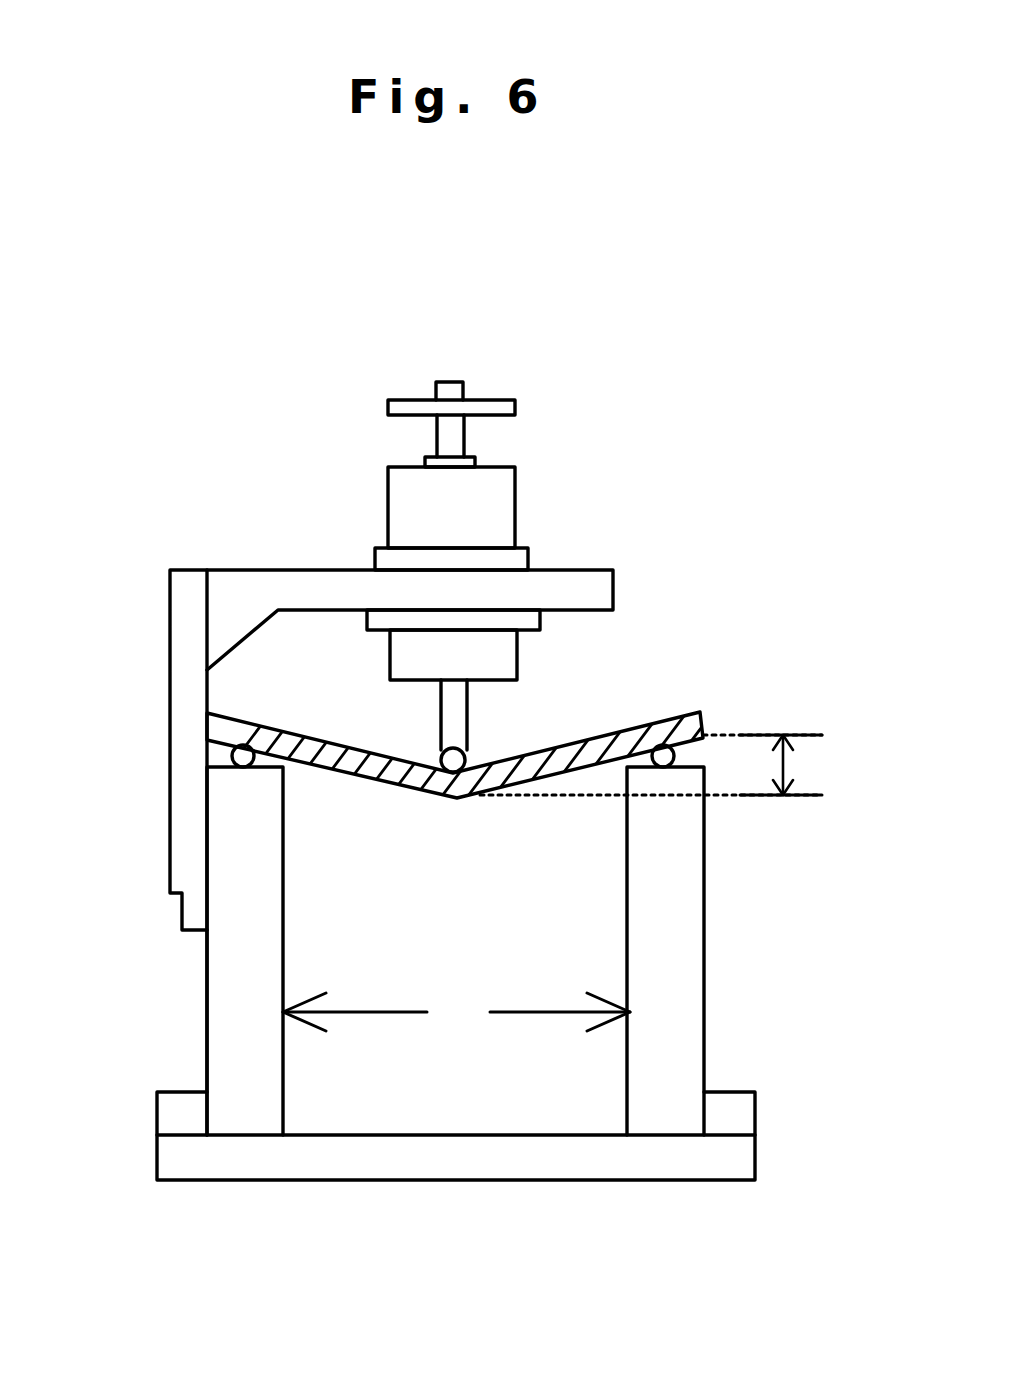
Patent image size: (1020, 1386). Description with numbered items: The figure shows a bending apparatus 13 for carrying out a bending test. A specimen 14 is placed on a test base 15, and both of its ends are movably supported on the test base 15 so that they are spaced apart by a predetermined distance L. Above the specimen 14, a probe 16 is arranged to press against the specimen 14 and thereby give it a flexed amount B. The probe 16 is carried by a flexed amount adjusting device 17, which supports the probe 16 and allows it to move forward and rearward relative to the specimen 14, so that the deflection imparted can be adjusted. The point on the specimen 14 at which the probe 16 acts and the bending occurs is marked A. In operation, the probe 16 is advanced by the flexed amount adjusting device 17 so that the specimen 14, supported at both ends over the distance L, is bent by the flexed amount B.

The bending apparatus 13 is at (544, 393).
The flexed amount adjusting device 17 is at (488, 525).
The probe 16 is at (450, 723).
The specimen 14 is at (683, 713).
The test base 15 is at (672, 1020).
The deflection point A is at (457, 800).
The flexed amount B is at (787, 765).
The predetermined distance L is at (456, 1012).